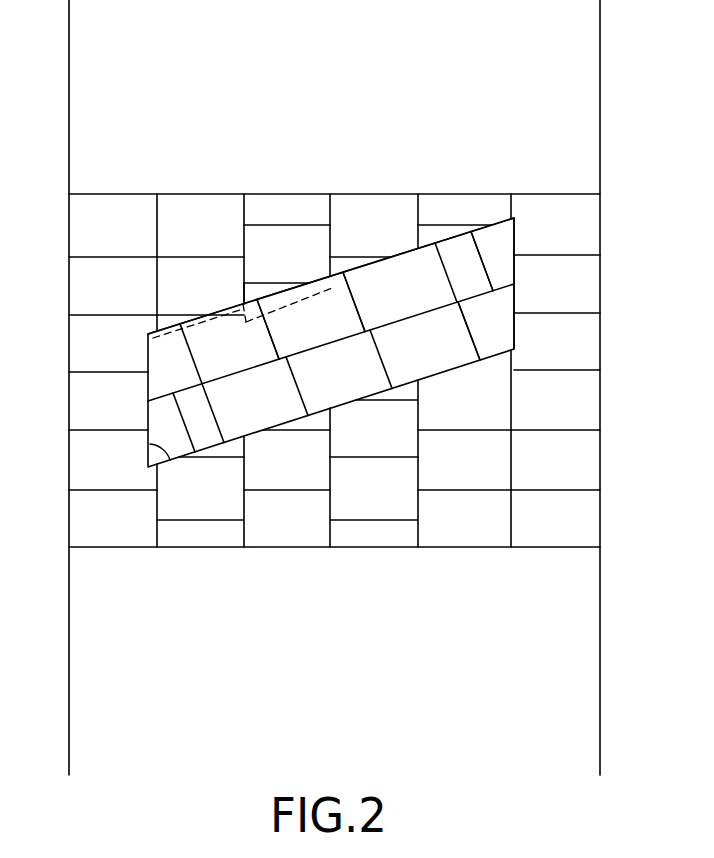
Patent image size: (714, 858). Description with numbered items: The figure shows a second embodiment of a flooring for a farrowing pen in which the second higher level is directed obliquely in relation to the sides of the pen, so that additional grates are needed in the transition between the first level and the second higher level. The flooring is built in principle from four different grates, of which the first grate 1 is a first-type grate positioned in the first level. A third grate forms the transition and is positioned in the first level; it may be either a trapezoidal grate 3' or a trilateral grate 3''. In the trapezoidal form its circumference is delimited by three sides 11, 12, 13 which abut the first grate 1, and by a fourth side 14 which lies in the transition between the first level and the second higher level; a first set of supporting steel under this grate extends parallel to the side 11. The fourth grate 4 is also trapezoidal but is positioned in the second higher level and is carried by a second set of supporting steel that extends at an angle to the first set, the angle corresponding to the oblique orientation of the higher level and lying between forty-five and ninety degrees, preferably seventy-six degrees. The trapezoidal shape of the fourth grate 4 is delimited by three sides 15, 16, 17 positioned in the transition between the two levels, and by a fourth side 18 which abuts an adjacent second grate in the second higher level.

The first grate 1 is at (193, 493).
The fourth grate 4 is at (492, 247).
The trapezoidal third grate 3' is at (331, 245).
The trilateral third grate 3'' is at (137, 330).
The side of the grate 11 is at (241, 288).
The side of the grate 12 is at (294, 282).
The side of the grate 13 is at (336, 287).
The fourth side of the grate 14 is at (295, 316).
The side of the grate 15 is at (501, 216).
The side of the grate 16 is at (524, 237).
The side of the grate 17 is at (510, 294).
The fourth side of the grate 18 is at (482, 274).